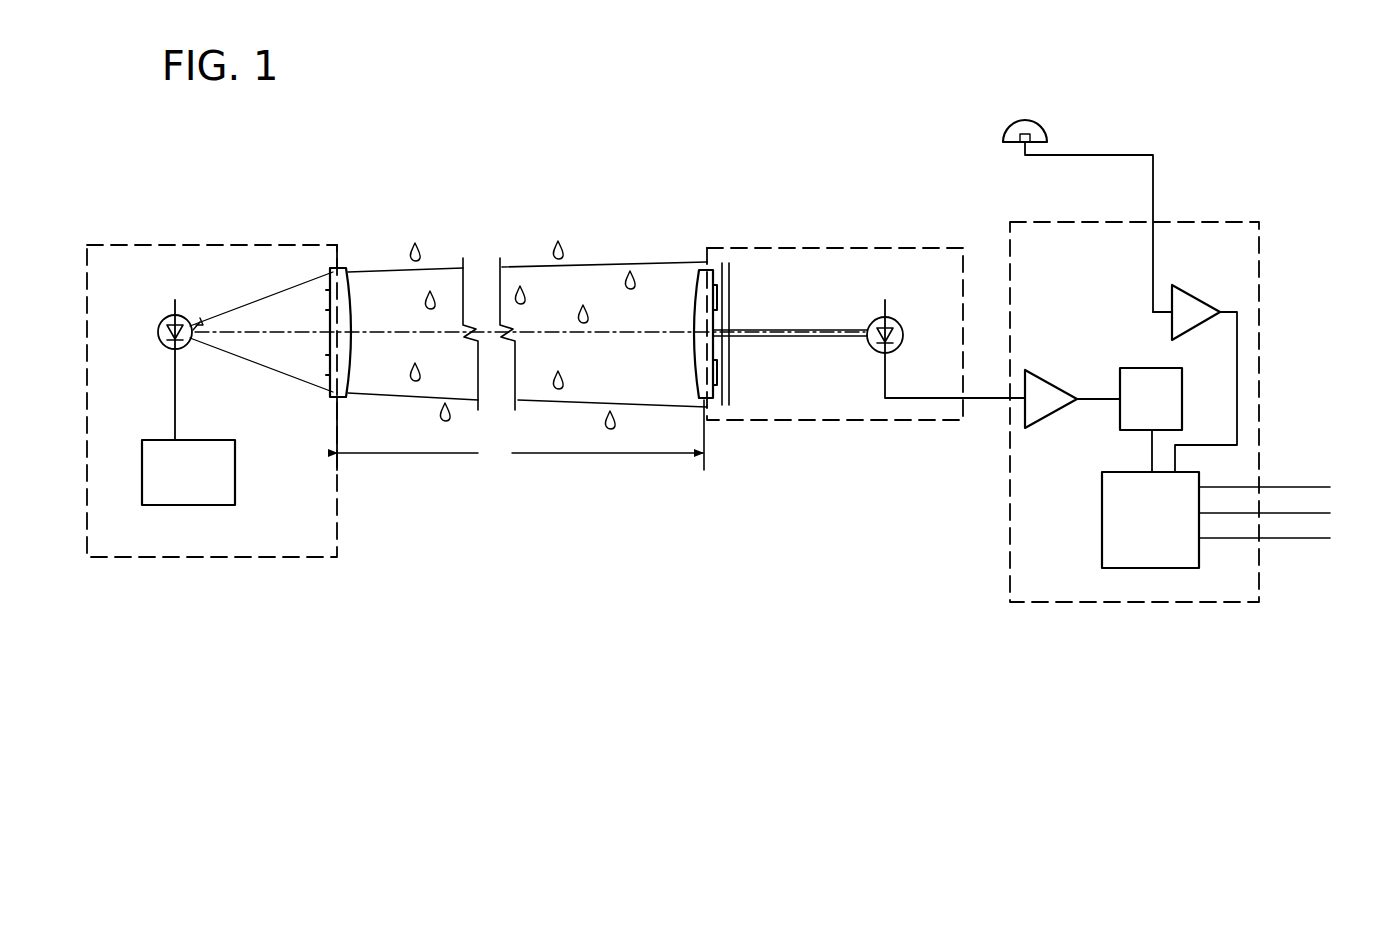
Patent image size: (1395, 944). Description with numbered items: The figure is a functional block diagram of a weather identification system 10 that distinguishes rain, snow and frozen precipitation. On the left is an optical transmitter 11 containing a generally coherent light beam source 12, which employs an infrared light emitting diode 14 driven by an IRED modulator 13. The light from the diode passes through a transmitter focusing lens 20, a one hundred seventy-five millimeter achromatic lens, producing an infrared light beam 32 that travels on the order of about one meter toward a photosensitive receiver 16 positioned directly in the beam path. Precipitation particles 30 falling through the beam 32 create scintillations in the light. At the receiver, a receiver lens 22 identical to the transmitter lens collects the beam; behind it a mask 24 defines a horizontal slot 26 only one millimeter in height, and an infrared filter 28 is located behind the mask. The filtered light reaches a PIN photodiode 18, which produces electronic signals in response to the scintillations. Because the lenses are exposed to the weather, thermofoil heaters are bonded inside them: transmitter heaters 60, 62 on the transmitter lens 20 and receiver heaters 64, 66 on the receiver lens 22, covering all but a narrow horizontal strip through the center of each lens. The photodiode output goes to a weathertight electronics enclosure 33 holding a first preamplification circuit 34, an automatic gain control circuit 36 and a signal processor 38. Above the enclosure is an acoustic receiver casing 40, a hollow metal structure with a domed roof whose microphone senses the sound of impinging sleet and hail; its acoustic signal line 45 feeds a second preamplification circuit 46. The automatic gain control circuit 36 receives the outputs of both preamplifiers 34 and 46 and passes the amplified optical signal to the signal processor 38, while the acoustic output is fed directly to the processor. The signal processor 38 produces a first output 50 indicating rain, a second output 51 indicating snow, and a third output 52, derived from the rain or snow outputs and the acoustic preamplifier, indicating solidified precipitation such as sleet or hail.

The weather identification system 10 is at (495, 513).
The optical transmitter 11 is at (165, 568).
The light beam source 12 is at (340, 522).
The IRED modulator 13 is at (205, 440).
The infrared light emitting diode 14 is at (160, 318).
The photosensitive receiver 16 is at (840, 232).
The PIN photodiode 18 is at (902, 322).
The transmitter focusing lens 20 is at (338, 268).
The receiver lens 22 is at (712, 270).
The mask 24 is at (704, 420).
The horizontal slot 26 is at (724, 330).
The infrared filter 28 is at (731, 278).
The precipitation particles 30 is at (420, 306).
The infrared light beam 32 is at (603, 262).
The electronics enclosure 33 is at (1272, 340).
The first preamplification circuit 34 is at (1046, 378).
The automatic gain control circuit 36 is at (1151, 420).
The signal processor 38 is at (1150, 520).
The acoustic receiver casing 40 is at (1037, 120).
The acoustic signal line 45 is at (1152, 238).
The second preamplification circuit 46 is at (1188, 300).
The first output 50 is at (1300, 487).
The second output 51 is at (1312, 513).
The third output 52 is at (1298, 538).
The transmitter heater 60 is at (325, 295).
The transmitter heater 62 is at (330, 368).
The receiver heater 64 is at (700, 292).
The receiver heater 66 is at (718, 375).